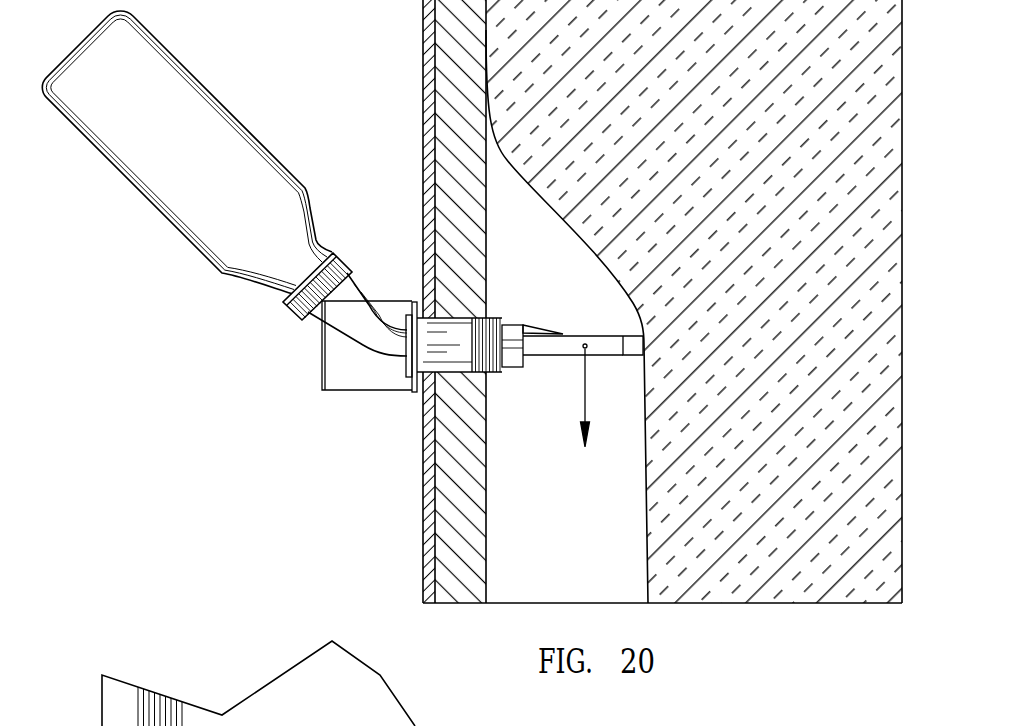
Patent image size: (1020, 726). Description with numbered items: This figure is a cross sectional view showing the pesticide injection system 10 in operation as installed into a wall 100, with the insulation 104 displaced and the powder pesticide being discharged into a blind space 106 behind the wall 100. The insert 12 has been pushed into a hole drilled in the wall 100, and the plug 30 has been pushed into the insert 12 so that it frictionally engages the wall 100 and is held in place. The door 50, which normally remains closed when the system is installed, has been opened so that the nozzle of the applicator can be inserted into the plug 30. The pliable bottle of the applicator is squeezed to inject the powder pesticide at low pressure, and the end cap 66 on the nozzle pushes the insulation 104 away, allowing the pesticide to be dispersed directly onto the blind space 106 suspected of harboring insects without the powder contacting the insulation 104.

The pesticide injection system 10 is at (245, 327).
The insert 12 is at (500, 303).
The plug 30 is at (407, 284).
The door 50 is at (338, 378).
The end cap 66 is at (632, 333).
The wall 100 is at (423, 93).
The insulation 104 is at (718, 176).
The blind space 106 is at (535, 497).